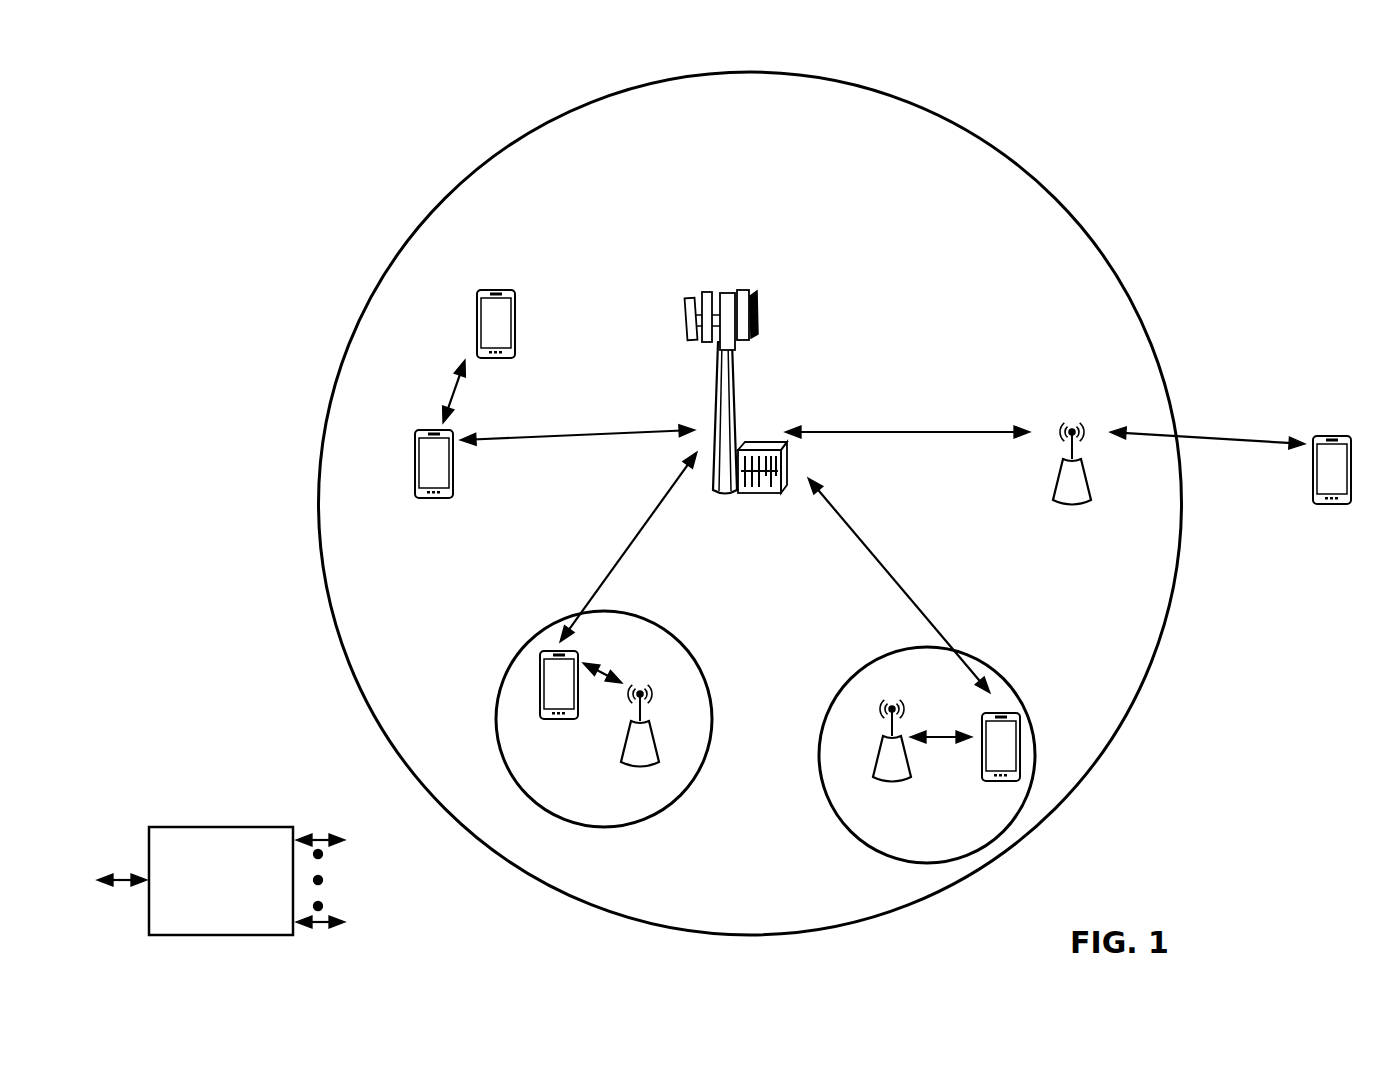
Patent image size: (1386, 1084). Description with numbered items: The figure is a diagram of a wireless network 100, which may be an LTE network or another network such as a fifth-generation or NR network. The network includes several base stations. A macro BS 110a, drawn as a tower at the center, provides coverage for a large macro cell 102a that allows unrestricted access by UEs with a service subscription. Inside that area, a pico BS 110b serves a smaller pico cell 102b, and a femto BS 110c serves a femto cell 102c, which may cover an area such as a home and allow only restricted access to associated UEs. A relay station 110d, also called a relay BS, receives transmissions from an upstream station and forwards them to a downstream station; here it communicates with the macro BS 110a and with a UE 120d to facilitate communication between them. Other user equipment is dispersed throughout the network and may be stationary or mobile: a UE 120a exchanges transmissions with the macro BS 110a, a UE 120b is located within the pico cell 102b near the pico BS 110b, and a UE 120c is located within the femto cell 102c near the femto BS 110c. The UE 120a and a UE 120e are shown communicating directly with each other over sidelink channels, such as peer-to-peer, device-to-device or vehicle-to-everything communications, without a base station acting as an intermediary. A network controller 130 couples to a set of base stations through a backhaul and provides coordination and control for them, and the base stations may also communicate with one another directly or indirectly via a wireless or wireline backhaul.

The wireless network 100 is at (200, 64).
The macro cell 102a is at (1038, 180).
The pico cell 102b is at (697, 657).
The femto cell 102c is at (862, 663).
The macro BS 110a is at (746, 280).
The pico BS 110b is at (663, 742).
The femto BS 110c is at (872, 773).
The relay station 110d is at (1070, 421).
The UE 120a is at (414, 462).
The UE 120b is at (545, 720).
The UE 120c is at (984, 783).
The UE 120d is at (1341, 432).
The UE 120e is at (477, 313).
The network controller 130 is at (218, 827).